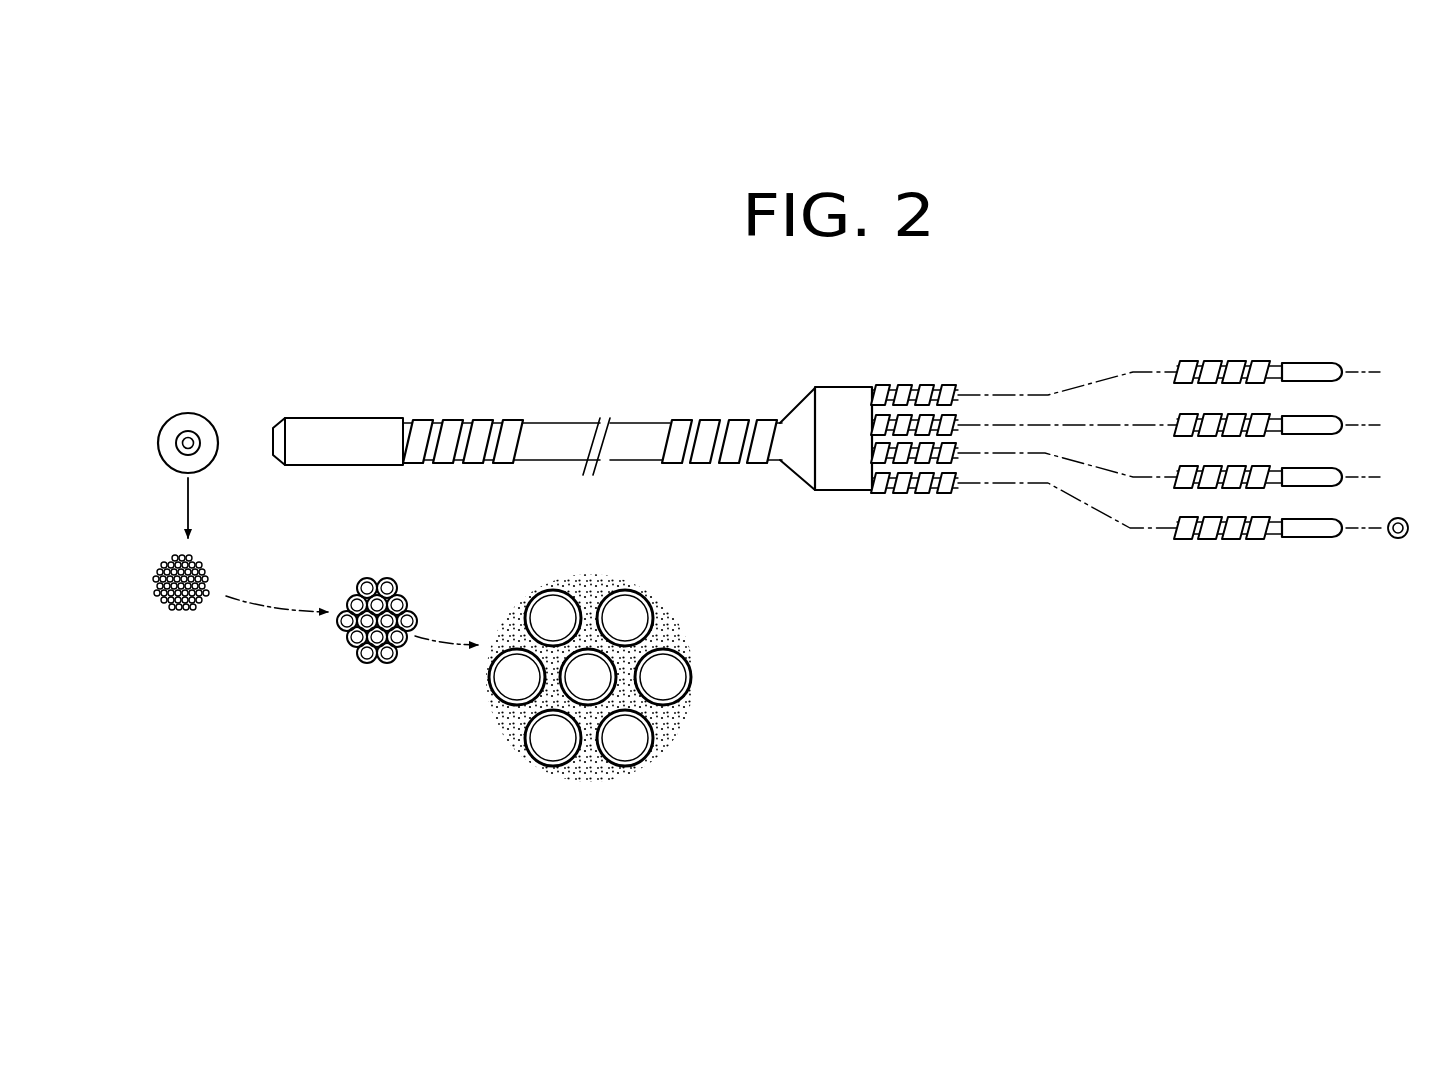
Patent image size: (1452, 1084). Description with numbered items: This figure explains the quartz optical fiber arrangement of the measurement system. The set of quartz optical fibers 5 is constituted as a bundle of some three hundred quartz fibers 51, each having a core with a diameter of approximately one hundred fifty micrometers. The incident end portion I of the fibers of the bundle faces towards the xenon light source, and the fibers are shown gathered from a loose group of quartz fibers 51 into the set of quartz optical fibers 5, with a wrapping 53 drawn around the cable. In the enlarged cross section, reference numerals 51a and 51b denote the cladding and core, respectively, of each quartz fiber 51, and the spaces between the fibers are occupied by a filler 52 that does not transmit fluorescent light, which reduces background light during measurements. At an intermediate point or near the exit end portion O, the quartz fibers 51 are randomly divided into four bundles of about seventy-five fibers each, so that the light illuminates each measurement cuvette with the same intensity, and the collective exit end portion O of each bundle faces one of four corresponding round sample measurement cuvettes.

The incident end portion I is at (190, 411).
The exit end portion O is at (1329, 360).
The set of quartz optical fibers 5 is at (725, 443).
The helical wrapping on cable 53 is at (483, 416).
The quartz fiber 51 is at (212, 565).
The cladding 51a is at (553, 592).
The core 51b is at (626, 614).
The filler 52 is at (662, 723).